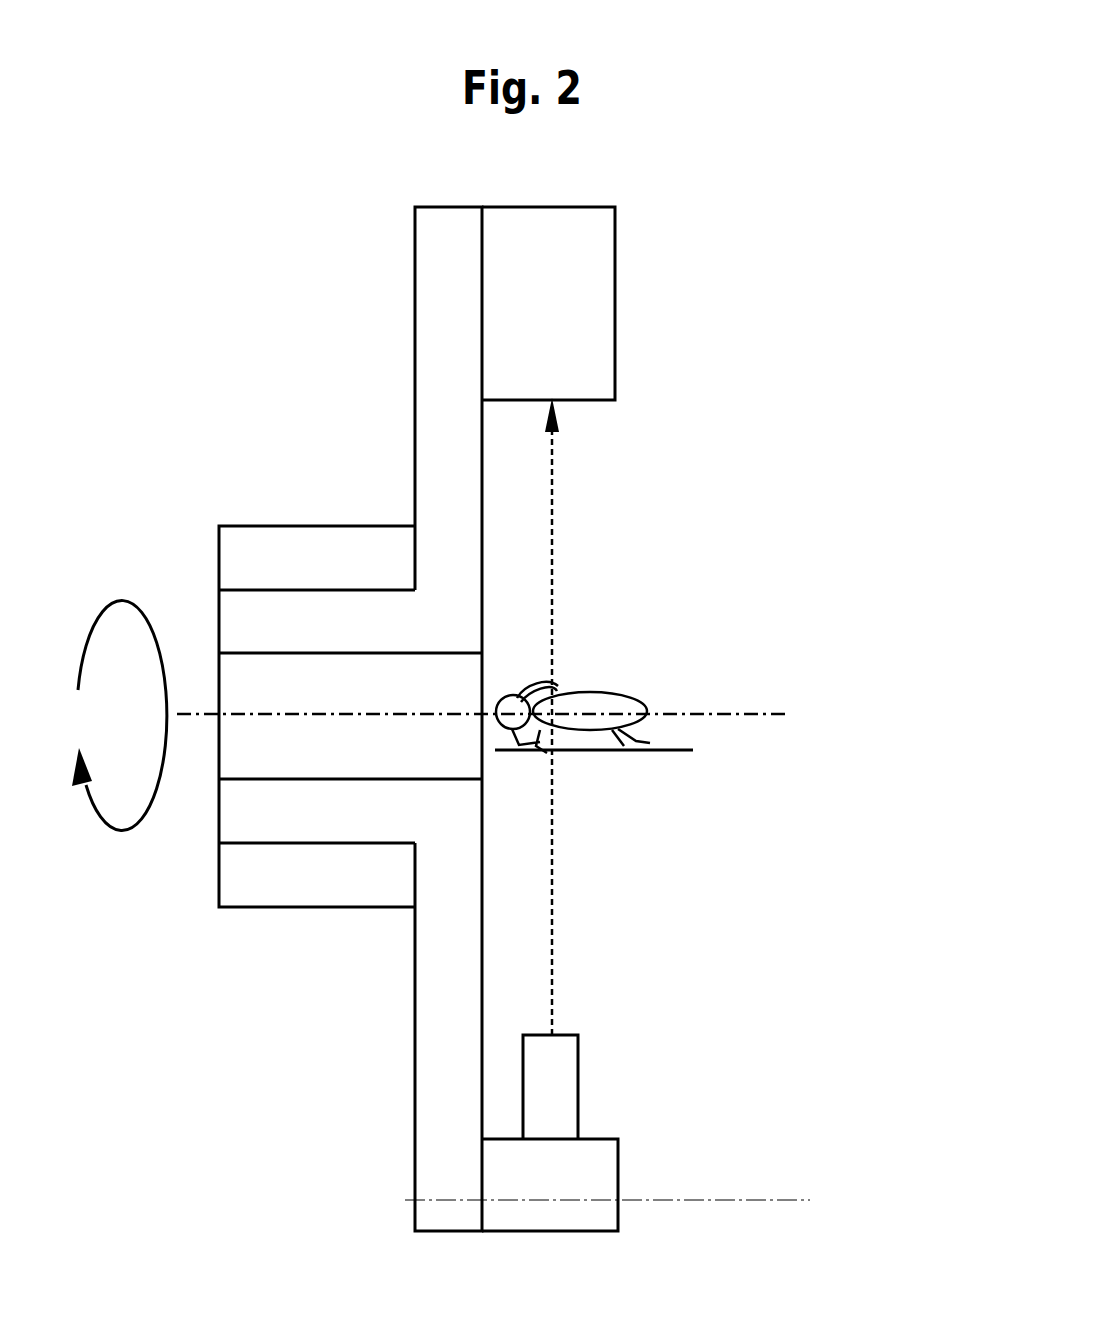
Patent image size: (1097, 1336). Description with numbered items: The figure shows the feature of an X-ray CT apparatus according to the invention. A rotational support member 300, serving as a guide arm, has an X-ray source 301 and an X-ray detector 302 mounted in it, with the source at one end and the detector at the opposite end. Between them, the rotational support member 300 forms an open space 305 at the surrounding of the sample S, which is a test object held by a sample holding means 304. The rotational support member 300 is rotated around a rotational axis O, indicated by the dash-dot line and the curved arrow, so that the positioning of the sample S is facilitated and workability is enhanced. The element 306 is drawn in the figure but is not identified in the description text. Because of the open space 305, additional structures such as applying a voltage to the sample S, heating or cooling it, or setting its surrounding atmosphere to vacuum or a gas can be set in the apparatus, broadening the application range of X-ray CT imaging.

The rotational support member 300 is at (408, 252).
The X-ray source 301 is at (618, 1193).
The X-ray detector 302 is at (615, 300).
The sample holding means 304 is at (663, 752).
The open space 305 is at (578, 530).
The rotary holder 306 is at (232, 745).
The sample S is at (630, 700).
The rotational axis O is at (768, 714).